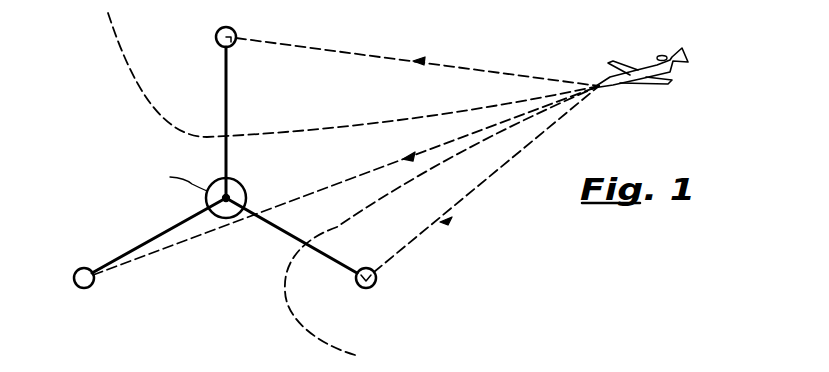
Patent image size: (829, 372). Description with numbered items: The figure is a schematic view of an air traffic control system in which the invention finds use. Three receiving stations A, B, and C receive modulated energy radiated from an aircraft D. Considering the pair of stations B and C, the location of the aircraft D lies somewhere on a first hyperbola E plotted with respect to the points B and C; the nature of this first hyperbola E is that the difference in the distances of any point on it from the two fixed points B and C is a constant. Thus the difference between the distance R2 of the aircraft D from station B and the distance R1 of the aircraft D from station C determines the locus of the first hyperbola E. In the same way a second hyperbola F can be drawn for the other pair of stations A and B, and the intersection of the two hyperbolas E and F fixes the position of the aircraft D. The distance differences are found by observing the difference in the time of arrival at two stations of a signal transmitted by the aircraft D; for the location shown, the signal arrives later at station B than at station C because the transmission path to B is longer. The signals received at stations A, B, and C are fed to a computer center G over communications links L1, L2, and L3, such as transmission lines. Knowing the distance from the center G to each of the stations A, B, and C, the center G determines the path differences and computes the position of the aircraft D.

The receiving station A is at (226, 23).
The receiving station B is at (74, 288).
The receiving station C is at (374, 286).
The aircraft D is at (462, 57).
The first hyperbola E is at (368, 208).
The second hyperbola F is at (355, 123).
The computer center G is at (207, 196).
The communications link L1 is at (227, 107).
The communications link L2 is at (163, 236).
The communications link L3 is at (304, 238).
The distance R1 is at (462, 198).
The distance R2 is at (302, 193).